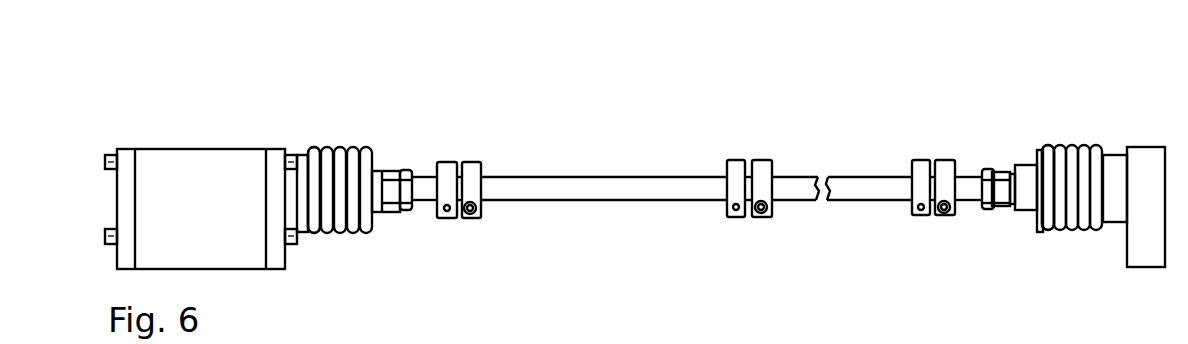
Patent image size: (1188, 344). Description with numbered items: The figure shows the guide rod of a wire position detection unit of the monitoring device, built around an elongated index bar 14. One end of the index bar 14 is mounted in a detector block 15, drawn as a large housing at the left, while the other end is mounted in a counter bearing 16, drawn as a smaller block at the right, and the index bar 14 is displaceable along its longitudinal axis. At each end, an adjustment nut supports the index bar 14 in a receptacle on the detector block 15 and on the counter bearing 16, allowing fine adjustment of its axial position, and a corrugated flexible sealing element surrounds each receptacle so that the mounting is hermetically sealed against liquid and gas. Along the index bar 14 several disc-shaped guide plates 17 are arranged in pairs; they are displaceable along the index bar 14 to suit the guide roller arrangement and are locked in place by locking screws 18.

The index bar 14 is at (588, 183).
The detector block 15 is at (192, 160).
The counter bearing 16 is at (1146, 152).
The guide plates 17 is at (447, 160).
The locking screws 18 is at (761, 205).